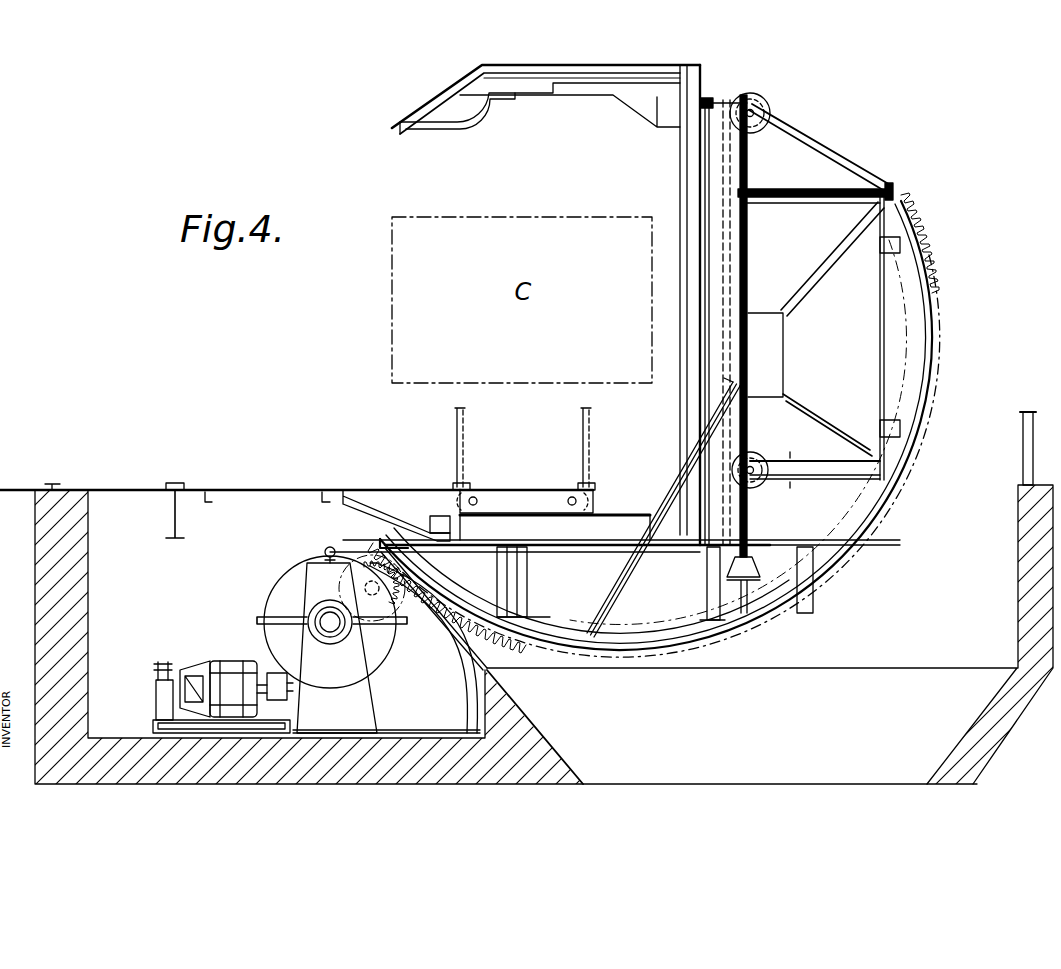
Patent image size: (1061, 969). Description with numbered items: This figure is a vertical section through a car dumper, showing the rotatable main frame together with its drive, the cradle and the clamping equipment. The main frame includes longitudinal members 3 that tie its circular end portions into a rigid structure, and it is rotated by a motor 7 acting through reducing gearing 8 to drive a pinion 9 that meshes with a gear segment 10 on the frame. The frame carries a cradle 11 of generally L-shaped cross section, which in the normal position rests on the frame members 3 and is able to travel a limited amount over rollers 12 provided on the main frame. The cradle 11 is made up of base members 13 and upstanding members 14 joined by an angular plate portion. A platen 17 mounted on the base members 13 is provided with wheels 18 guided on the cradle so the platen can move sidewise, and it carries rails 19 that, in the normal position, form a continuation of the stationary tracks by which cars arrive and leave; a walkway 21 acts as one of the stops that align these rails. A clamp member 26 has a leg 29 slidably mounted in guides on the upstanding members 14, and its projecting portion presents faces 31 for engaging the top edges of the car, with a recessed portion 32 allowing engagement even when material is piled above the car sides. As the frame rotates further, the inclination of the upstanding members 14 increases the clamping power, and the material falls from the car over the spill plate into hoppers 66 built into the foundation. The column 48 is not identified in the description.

The longitudinal members 3 is at (520, 584).
The motor 7 is at (222, 667).
The reducing gearing 8 is at (287, 583).
The pinion 9 is at (367, 561).
The gear segment 10 is at (928, 283).
The cradle 11 is at (671, 457).
The rollers 12 is at (769, 104).
The base members 13 is at (598, 534).
The upstanding members 14 is at (721, 170).
The platen 17 is at (508, 500).
The wheels 18 is at (588, 500).
The rails 19 is at (458, 485).
The walkway 21 is at (380, 489).
The clamp member 26 is at (442, 105).
The leg 29 is at (692, 84).
The faces 31 is at (447, 121).
The recessed portion 32 is at (552, 105).
The guide column 48 is at (679, 184).
The hoppers 66 is at (754, 719).